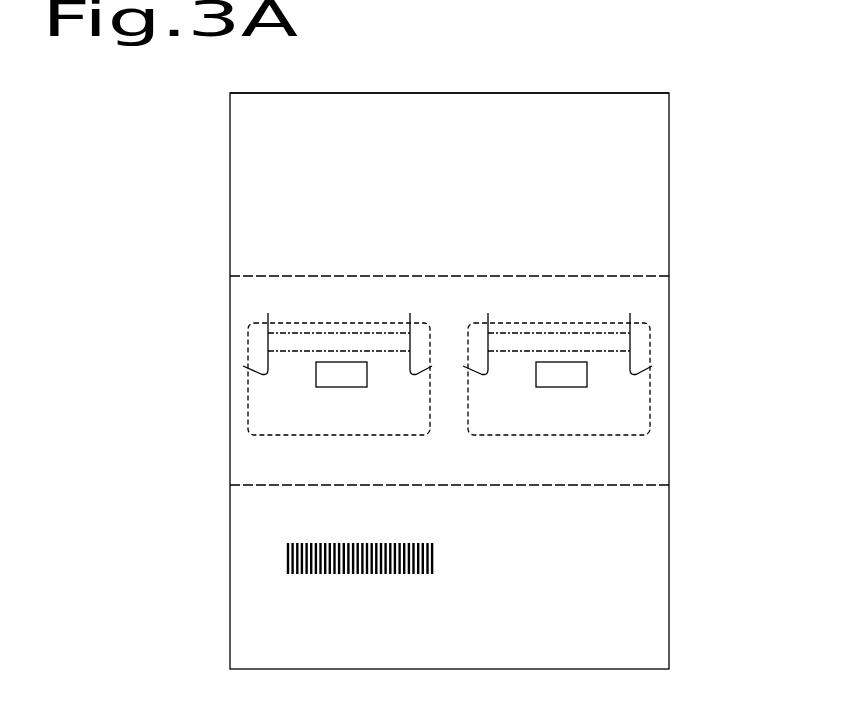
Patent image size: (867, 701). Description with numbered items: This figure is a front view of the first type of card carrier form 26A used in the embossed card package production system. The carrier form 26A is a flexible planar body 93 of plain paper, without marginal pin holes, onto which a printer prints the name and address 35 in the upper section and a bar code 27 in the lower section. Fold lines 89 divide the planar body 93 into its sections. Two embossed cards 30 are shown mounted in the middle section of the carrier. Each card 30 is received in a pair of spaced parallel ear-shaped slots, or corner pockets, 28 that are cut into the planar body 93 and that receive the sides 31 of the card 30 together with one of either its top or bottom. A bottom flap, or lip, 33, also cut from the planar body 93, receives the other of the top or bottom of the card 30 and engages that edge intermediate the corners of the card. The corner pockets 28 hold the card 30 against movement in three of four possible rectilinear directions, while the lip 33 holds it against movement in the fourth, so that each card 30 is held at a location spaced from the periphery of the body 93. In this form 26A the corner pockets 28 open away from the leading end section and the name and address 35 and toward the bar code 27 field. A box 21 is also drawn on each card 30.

The carrier form 26A is at (682, 201).
The flexible planar body 93 is at (418, 104).
The fold 89 is at (372, 276).
The name and address 35 is at (297, 227).
The card 30 is at (403, 428).
The corner pocket 28 is at (277, 322).
The side of card 31 is at (250, 343).
The window / box 21 is at (325, 377).
The lip 33 is at (288, 440).
The bar code 27 is at (285, 562).